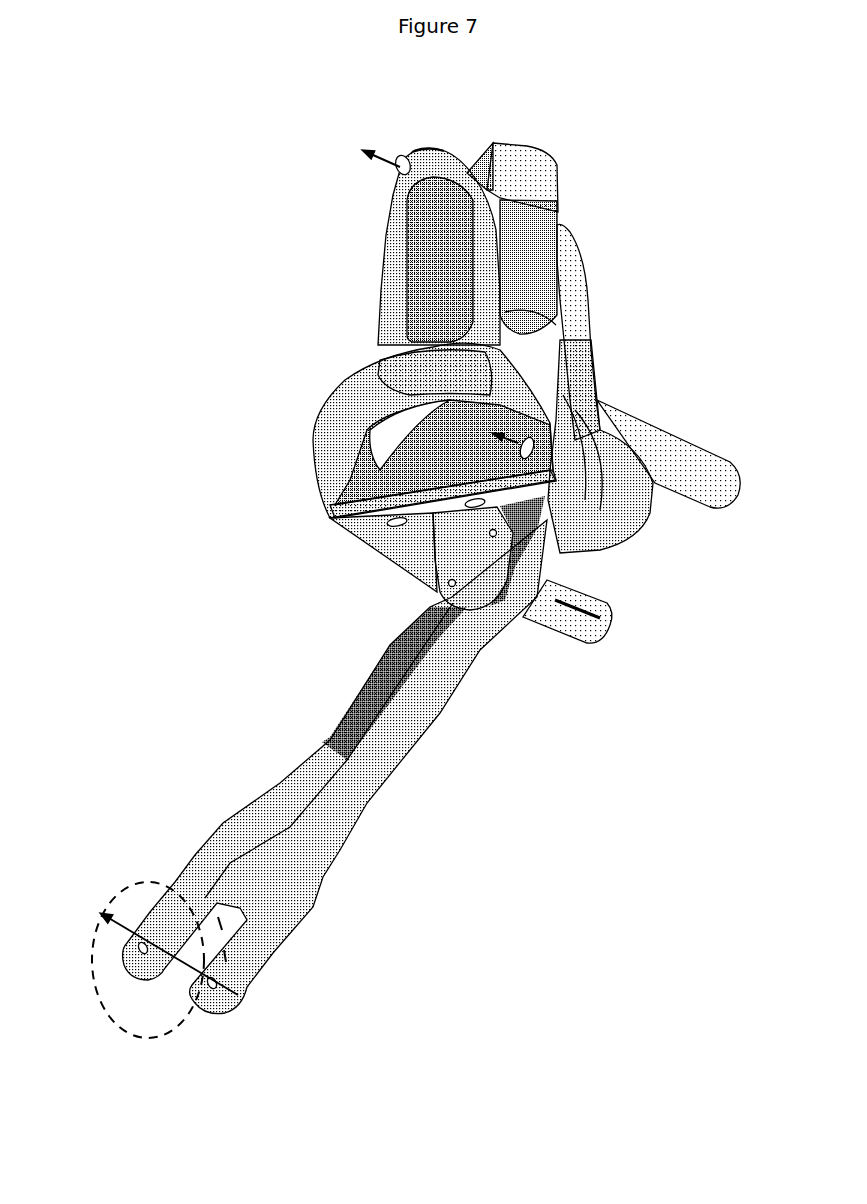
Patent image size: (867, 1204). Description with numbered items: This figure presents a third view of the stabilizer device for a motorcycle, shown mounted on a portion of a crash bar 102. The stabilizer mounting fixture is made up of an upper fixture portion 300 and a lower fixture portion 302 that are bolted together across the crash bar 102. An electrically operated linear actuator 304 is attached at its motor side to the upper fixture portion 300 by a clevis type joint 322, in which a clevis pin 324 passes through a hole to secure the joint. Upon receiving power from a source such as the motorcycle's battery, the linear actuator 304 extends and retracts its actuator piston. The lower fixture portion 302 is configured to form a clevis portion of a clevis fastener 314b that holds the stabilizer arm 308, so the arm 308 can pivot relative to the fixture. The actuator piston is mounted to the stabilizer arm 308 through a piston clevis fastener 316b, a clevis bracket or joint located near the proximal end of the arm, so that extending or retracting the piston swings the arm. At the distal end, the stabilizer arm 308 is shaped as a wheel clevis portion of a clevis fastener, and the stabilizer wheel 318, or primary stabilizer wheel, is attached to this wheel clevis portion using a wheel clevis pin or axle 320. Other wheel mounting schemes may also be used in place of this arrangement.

The crash bar 102 is at (333, 385).
The upper fixture portion 300 is at (372, 253).
The lower fixture portion 302 is at (358, 548).
The electrically operated linear actuator 304 is at (567, 190).
The stabilizer arm 308 is at (437, 733).
The clevis fastener 314b is at (637, 535).
The piston clevis fastener 316b is at (452, 548).
The stabilizer wheel 318 is at (95, 1018).
The axle 320 is at (100, 912).
The clevis type joint 322 is at (425, 142).
The clevis pin 324 is at (387, 154).